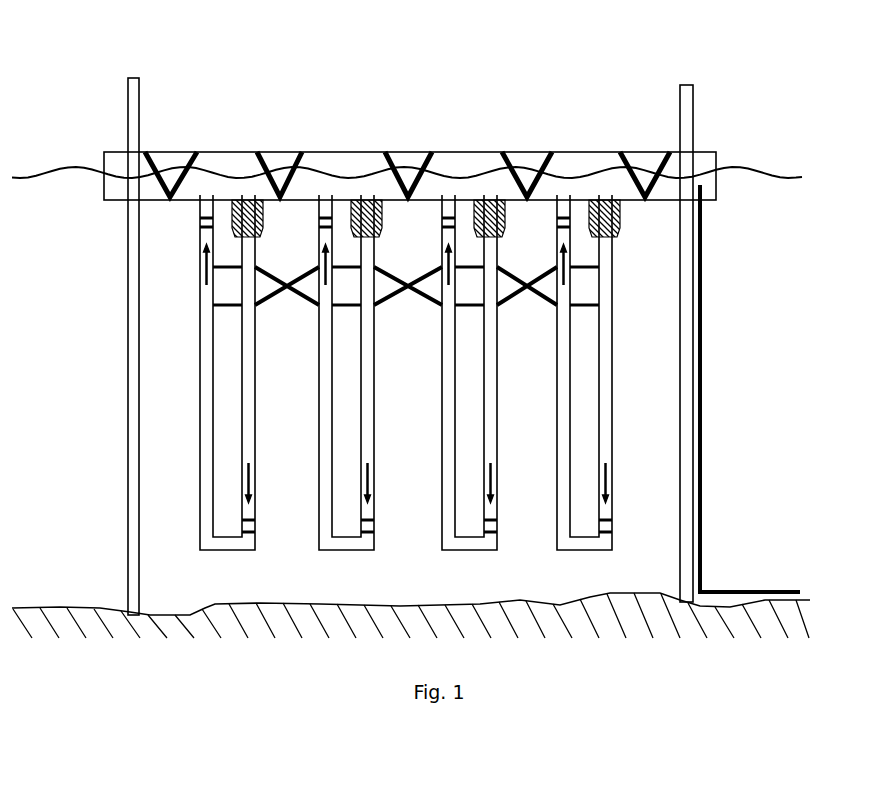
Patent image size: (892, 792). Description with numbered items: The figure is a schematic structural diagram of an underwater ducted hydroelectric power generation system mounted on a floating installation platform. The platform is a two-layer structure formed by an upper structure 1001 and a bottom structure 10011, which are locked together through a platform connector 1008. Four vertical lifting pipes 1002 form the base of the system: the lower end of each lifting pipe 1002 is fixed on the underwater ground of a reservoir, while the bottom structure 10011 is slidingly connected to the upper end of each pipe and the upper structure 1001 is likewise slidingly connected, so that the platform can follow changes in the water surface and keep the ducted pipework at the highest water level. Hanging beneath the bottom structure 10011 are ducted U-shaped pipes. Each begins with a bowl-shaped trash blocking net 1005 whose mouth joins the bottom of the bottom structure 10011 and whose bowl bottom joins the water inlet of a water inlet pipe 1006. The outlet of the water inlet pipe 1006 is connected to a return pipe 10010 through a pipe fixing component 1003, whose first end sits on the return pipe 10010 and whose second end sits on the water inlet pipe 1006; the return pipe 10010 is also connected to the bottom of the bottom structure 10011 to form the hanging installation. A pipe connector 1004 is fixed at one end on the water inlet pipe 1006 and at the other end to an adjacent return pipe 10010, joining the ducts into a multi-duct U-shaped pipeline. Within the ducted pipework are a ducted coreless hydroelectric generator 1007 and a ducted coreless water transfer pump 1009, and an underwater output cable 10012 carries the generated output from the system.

The upper structure of a floating installation platform 1001 is at (110, 151).
The lifting pipe 1002 is at (132, 122).
The pipe fixing component 1003 is at (235, 266).
The pipe connector 1004 is at (317, 267).
The bowl-shaped trash blocking net 1005 is at (373, 203).
The water inlet pipe 1006 is at (370, 311).
The ducted coreless hydroelectric generator 1007 is at (368, 503).
The platform connector 1008 is at (472, 240).
The ducted coreless water transfer pump 1009 is at (562, 216).
The return pipe 10010 is at (563, 417).
The bottom structure of the floating installation platform 10011 is at (683, 197).
The underwater output cable 10012 is at (700, 330).